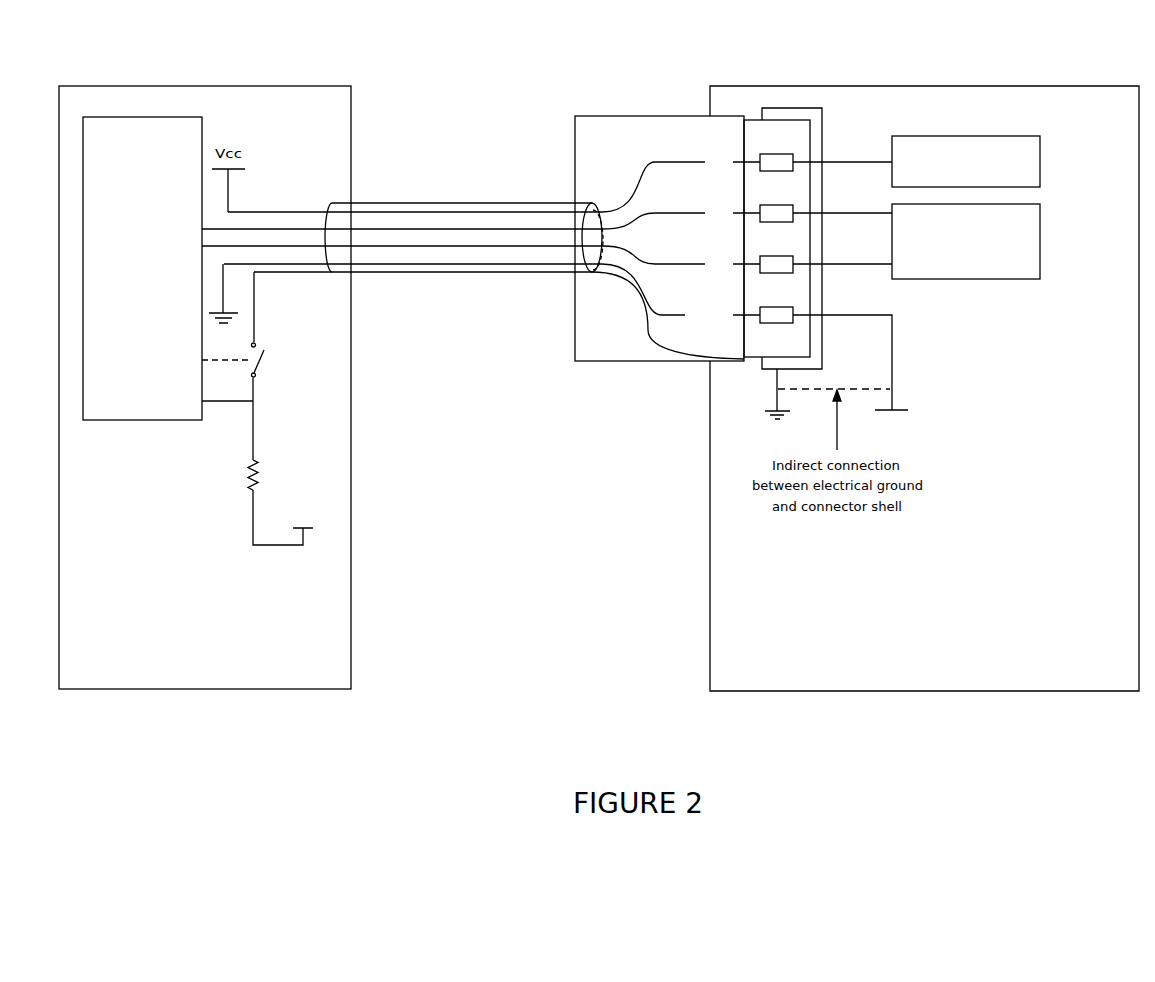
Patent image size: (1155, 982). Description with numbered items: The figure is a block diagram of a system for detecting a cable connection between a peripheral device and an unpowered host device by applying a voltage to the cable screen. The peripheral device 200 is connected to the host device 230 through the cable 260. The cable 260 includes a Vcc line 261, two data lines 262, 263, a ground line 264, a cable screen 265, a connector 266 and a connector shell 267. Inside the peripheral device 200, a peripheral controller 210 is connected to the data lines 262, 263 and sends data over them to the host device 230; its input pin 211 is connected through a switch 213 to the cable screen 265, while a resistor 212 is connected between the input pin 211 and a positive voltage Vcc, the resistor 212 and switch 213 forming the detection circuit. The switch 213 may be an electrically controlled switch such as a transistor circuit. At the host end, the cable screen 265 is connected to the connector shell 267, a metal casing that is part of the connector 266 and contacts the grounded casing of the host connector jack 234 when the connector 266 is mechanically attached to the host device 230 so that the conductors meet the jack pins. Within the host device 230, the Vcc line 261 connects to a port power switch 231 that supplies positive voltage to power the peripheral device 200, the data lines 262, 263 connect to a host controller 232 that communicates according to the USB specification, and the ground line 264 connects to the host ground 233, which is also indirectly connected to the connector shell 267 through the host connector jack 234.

The peripheral device 200 is at (292, 676).
The peripheral controller 210 is at (152, 176).
The input pin 211 is at (192, 400).
The resistor 212 is at (254, 501).
The switch 213 is at (258, 366).
The host device 230 is at (1093, 680).
The port power switch 231 is at (955, 180).
The host controller 232 is at (954, 261).
The host ground 233 is at (875, 367).
The host connector jack 234 is at (792, 98).
The cable 260 is at (460, 128).
The Vcc line 261 is at (560, 183).
The data line 262 is at (547, 223).
The data line 263 is at (547, 268).
The ground line 264 is at (492, 302).
The cable screen 265 is at (503, 286).
The connector 266 is at (569, 373).
The connector shell 267 is at (751, 373).